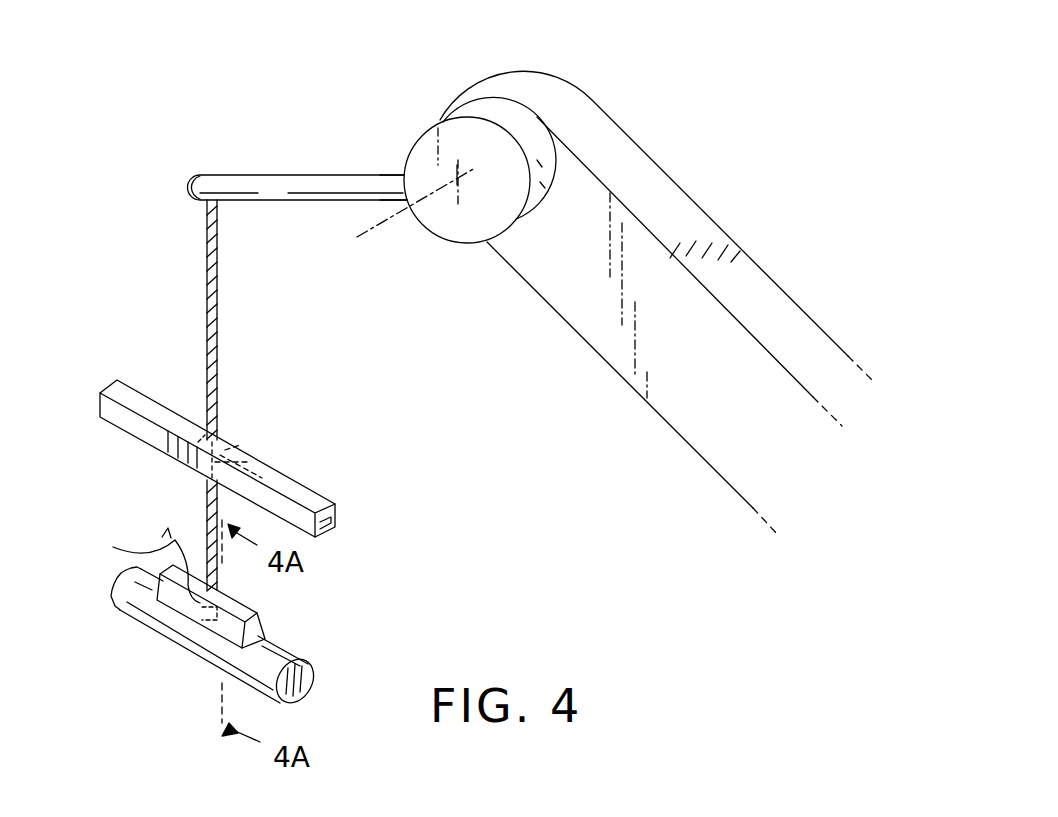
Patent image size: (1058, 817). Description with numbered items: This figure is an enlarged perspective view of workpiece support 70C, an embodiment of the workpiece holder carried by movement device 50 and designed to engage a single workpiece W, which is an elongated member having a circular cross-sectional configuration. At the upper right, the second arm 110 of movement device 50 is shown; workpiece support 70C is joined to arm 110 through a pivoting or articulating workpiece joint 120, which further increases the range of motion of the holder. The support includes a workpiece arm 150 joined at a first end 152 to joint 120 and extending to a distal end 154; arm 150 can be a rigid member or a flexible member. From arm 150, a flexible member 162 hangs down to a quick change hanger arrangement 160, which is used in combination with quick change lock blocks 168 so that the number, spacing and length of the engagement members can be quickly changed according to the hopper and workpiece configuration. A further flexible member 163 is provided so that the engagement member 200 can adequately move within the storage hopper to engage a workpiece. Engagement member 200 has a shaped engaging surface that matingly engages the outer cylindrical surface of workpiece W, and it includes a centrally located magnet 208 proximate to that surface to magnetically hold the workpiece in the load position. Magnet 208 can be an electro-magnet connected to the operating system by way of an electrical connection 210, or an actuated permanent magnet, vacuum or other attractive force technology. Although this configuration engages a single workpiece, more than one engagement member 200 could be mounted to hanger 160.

The movement device 50 is at (670, 110).
The second arm 110 is at (670, 197).
The workpiece joint 120 is at (446, 128).
The workpiece support 70C is at (175, 162).
The workpiece arm 150 is at (307, 170).
The first end 152 is at (390, 170).
The distal end 154 is at (207, 173).
The flexible member 162 is at (217, 295).
The quick change hanger arrangement 160 is at (140, 402).
The flexible member 163 is at (215, 503).
The quick change lock blocks 168 is at (242, 424).
The engagement member 200 is at (260, 628).
The magnet 208 is at (198, 635).
The electrical connection 210 is at (132, 565).
The workpiece W is at (135, 615).